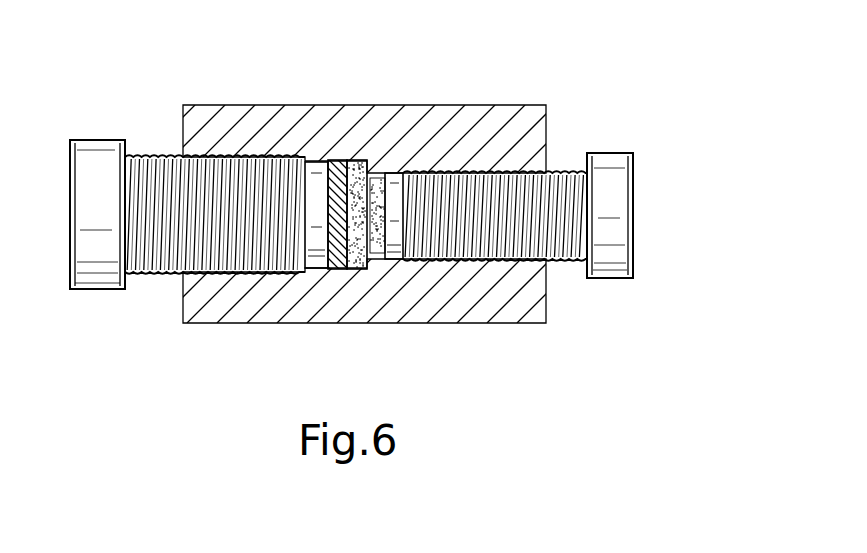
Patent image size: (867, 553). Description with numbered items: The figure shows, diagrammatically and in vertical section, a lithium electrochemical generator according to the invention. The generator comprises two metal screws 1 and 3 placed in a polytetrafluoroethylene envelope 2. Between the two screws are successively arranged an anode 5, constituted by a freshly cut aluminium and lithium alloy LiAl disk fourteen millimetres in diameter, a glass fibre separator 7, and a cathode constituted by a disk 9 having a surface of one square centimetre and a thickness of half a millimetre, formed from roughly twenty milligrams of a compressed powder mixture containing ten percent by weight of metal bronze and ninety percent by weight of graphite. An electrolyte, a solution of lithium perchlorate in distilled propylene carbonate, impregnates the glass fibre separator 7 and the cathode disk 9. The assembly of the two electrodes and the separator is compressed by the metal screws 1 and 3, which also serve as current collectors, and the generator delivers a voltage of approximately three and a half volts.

The metal screw 1 is at (97, 145).
The polytetrafluoroethylene envelope 2 is at (272, 128).
The metal screw 3 is at (565, 170).
The anode 5 is at (330, 263).
The glass fibre separator 7 is at (353, 263).
The cathode disk 9 is at (378, 185).